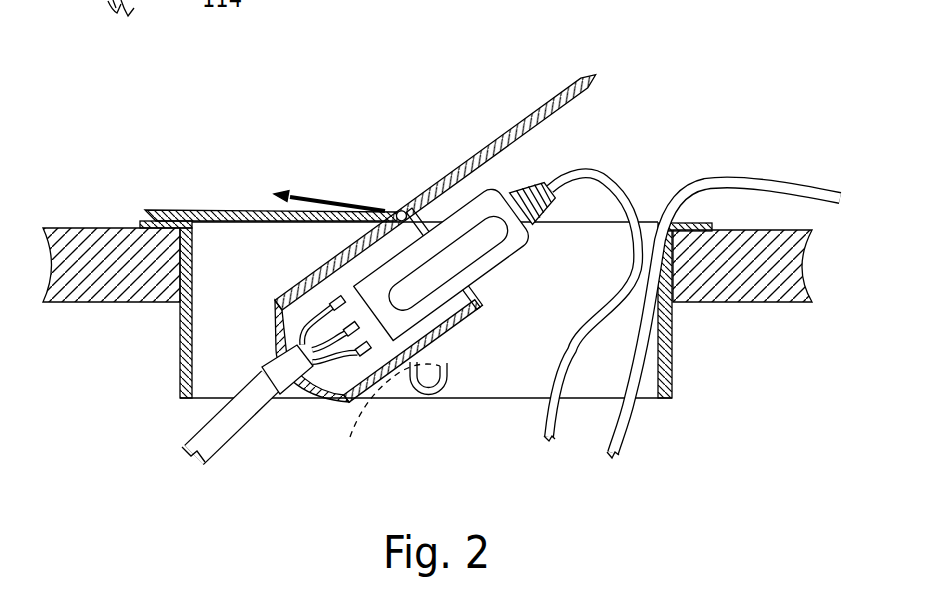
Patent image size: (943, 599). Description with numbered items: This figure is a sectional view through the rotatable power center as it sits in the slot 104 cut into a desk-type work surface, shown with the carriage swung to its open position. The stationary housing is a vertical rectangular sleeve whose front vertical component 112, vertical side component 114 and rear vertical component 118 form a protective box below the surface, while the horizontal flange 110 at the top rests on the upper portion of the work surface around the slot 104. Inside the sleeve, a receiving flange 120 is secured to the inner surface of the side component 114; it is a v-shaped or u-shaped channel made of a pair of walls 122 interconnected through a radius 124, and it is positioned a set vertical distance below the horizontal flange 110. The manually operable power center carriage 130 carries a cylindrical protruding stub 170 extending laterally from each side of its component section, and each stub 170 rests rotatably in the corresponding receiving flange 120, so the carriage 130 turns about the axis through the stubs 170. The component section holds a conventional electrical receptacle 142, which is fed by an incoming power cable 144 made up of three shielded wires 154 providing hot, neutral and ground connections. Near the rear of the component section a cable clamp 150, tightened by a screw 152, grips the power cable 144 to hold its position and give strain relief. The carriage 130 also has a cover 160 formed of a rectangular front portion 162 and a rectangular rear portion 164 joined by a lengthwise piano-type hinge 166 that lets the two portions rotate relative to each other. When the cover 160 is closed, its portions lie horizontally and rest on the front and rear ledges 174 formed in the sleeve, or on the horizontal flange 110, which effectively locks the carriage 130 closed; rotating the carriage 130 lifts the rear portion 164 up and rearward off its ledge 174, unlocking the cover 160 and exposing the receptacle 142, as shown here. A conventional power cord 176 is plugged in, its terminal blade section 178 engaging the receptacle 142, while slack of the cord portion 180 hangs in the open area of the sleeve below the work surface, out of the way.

The slot 104 is at (142, 349).
The horizontal flange 110 is at (137, 225).
The front vertical component 112 is at (672, 380).
The vertical side component 114 is at (398, 392).
The rear vertical component 118 is at (182, 377).
The receiving flange 120 is at (466, 334).
The walls 122 is at (447, 364).
The radius 124 is at (418, 398).
The power center carriage 130 is at (362, 167).
The electrical receptacle 142 is at (380, 267).
The incoming power cable 144 is at (218, 440).
The cable clamp 150 is at (305, 413).
The screw 152 is at (262, 360).
The shielded wires 154 is at (312, 323).
The cover 160 is at (504, 77).
The front portion 162 is at (570, 107).
The rear portion 164 is at (233, 212).
The piano-type hinge 166 is at (400, 212).
The protruding stub 170 is at (438, 397).
The ledge 174 is at (188, 217).
The power cord 176 is at (634, 147).
The terminal blade section 178 is at (493, 187).
The cord portion 180 is at (545, 415).